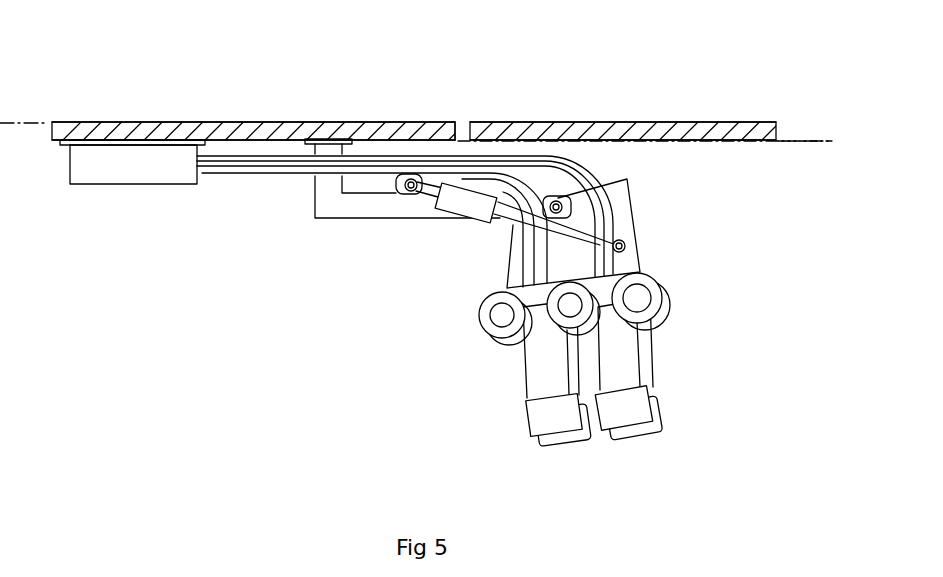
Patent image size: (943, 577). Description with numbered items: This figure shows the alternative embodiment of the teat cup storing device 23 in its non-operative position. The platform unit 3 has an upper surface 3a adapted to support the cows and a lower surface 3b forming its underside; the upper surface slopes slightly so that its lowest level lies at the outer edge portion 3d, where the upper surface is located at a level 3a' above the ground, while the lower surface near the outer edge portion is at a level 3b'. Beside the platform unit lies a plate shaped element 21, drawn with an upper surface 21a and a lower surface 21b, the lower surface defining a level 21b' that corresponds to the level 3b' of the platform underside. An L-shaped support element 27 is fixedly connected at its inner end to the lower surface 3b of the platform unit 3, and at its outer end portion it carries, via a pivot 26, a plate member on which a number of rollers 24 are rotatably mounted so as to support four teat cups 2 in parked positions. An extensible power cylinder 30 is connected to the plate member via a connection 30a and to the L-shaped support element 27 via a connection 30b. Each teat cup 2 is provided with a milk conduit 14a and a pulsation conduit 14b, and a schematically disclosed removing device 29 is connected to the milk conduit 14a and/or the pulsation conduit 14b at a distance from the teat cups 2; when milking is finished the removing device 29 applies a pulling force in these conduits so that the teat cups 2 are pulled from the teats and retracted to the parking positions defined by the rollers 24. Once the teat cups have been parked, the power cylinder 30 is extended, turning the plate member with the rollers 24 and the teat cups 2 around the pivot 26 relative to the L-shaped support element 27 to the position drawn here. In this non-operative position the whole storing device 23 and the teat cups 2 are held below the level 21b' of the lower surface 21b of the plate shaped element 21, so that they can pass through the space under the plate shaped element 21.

The platform unit 3 is at (177, 127).
The upper surface 3a is at (253, 69).
The lower surface 3b is at (253, 87).
The outer edge portion 3d is at (457, 117).
The level of the upper surface 3a' is at (44, 70).
The level of the lower surface 3b' is at (775, 84).
The plate shaped element 21 is at (510, 127).
The upper side of second plate 21a is at (607, 120).
The lower surface 21b is at (623, 87).
The level of the lower surface 21b' is at (823, 84).
The removing device 29 is at (132, 163).
The milk conduit 14a is at (213, 158).
The pulsation conduit 14b is at (263, 170).
The L-shaped support element 27 is at (332, 200).
The extensible power cylinder 30 is at (467, 204).
The connection 30a is at (624, 246).
The connection 30b is at (407, 193).
The pivot 26 is at (562, 205).
The teat cup storing device 23 is at (658, 222).
The rollers 24 is at (654, 298).
The teat cups 2 is at (623, 407).